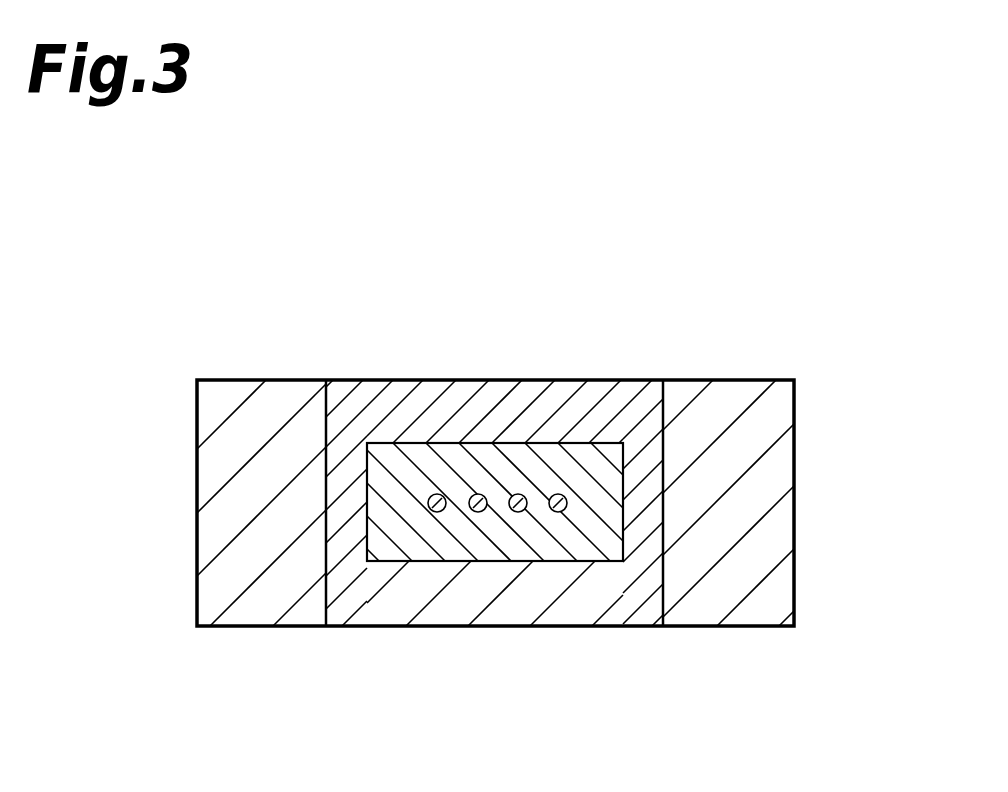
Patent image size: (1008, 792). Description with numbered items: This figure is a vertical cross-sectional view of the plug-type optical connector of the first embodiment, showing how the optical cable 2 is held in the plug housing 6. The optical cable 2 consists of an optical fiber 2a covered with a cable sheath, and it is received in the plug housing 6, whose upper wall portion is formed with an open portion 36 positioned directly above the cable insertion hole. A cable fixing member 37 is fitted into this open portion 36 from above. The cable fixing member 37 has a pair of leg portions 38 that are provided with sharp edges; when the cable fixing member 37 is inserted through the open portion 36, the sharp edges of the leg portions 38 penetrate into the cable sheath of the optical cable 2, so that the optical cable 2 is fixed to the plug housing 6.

The optical cable 2 is at (483, 478).
The optical fiber 2a is at (443, 512).
The plug housing 6 is at (758, 437).
The open portion 36 is at (667, 445).
The cable fixing member 37 is at (357, 410).
The leg portions 38 is at (635, 595).